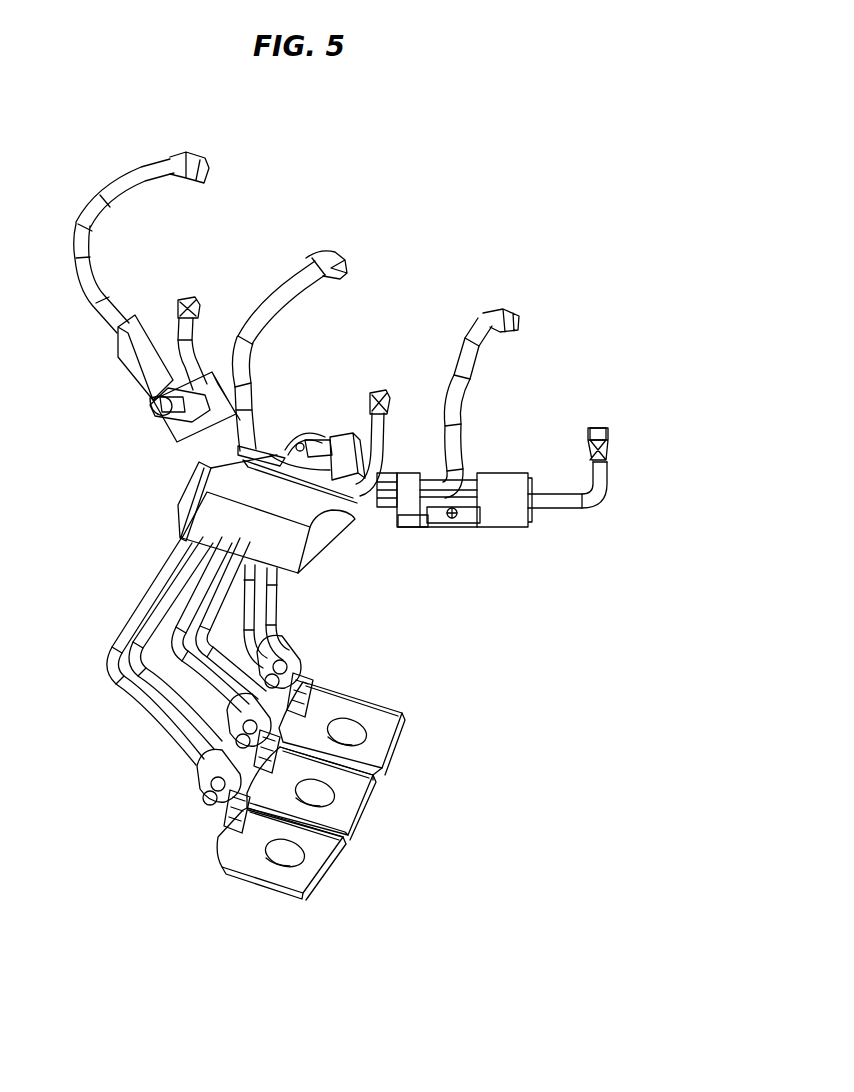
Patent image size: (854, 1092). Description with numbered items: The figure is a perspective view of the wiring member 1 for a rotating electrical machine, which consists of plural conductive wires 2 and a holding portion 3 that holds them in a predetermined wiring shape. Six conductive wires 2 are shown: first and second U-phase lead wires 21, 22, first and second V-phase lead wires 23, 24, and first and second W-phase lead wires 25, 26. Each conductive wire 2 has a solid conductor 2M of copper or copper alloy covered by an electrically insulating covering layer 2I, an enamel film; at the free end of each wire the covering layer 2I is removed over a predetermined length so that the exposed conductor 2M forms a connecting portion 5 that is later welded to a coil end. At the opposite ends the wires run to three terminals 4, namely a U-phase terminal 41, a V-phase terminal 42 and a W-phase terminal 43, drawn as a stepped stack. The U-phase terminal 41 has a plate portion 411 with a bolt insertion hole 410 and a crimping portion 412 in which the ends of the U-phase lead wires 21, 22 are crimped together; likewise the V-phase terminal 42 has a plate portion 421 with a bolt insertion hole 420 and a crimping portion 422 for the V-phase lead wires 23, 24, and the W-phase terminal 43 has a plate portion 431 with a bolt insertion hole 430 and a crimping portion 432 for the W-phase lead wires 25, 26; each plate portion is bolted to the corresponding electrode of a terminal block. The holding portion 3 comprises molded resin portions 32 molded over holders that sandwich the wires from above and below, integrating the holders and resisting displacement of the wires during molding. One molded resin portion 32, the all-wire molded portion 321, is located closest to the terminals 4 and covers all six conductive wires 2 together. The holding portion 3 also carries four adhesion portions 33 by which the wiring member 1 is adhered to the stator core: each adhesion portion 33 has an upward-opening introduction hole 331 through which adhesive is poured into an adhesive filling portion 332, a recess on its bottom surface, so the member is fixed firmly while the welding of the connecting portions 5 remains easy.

The wiring member for rotating electrical machine 1 is at (502, 146).
The conductive wires 2 is at (660, 445).
The conductor 2M is at (590, 450).
The covering layer 2I is at (593, 472).
The holding portion 3 is at (165, 517).
The terminals 4 is at (220, 888).
The connecting portion 5 is at (597, 428).
The first U-phase lead wire 21 is at (133, 183).
The second U-phase lead wire 22 is at (195, 337).
The first V-phase lead wire 23 is at (270, 305).
The second V-phase lead wire 24 is at (383, 433).
The first W-phase lead wire 25 is at (465, 370).
The second W-phase lead wire 26 is at (598, 495).
The molded resin portions 32 is at (145, 330).
The adhesion portions 33 is at (150, 405).
The all-wire molded portion 321 is at (190, 503).
The introduction hole 331 is at (175, 418).
The adhesive filling portion 332 is at (170, 405).
The U-phase terminal 41 is at (301, 862).
The V-phase terminal 42 is at (333, 797).
The W-phase terminal 43 is at (364, 731).
The bolt insertion hole 410 is at (287, 860).
The plate portion 411 is at (313, 867).
The crimping portion 412 is at (197, 787).
The bolt insertion hole 420 is at (323, 800).
The plate portion 421 is at (347, 802).
The crimping portion 422 is at (228, 728).
The bolt insertion hole 430 is at (353, 737).
The plate portion 431 is at (382, 737).
The crimping portion 432 is at (287, 650).